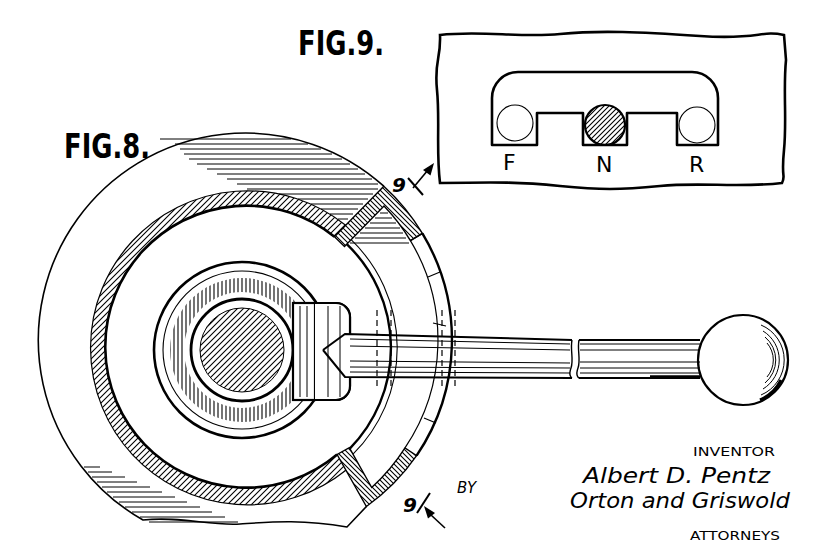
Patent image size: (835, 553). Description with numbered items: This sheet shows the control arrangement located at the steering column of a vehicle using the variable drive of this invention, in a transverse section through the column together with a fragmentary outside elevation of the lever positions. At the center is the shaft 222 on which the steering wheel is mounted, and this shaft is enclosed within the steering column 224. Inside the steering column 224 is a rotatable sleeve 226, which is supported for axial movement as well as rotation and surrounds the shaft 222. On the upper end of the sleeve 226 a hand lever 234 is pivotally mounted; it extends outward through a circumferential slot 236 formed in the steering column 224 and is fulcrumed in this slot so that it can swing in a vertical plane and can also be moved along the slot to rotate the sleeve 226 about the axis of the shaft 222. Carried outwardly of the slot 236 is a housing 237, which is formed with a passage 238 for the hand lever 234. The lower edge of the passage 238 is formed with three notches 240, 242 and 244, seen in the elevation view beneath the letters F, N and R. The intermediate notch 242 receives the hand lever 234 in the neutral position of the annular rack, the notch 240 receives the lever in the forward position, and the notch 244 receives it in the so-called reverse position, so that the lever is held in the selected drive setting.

In FIG. 8, the shaft 222 is at (240, 312).
In FIG. 8, the steering column 224 is at (141, 243).
In FIG. 8, the rotatable sleeve 226 is at (203, 293).
In FIG. 8, the hand lever 234 is at (610, 366).
In FIG. 9, the hand lever 234 is at (620, 106).
In FIG. 8, the circumferential slot 236 is at (379, 293).
In FIG. 8, the housing 237 is at (415, 236).
In FIG. 9, the housing 237 is at (708, 42).
In FIG. 8, the passage 238 is at (453, 300).
In FIG. 9, the passage 238 is at (575, 77).
In FIG. 8, the notch 240 is at (440, 433).
In FIG. 9, the notch 240 is at (498, 142).
In FIG. 8, the intermediate notch 242 is at (445, 328).
In FIG. 9, the intermediate notch 242 is at (583, 142).
In FIG. 8, the notch 244 is at (427, 242).
In FIG. 9, the notch 244 is at (712, 146).